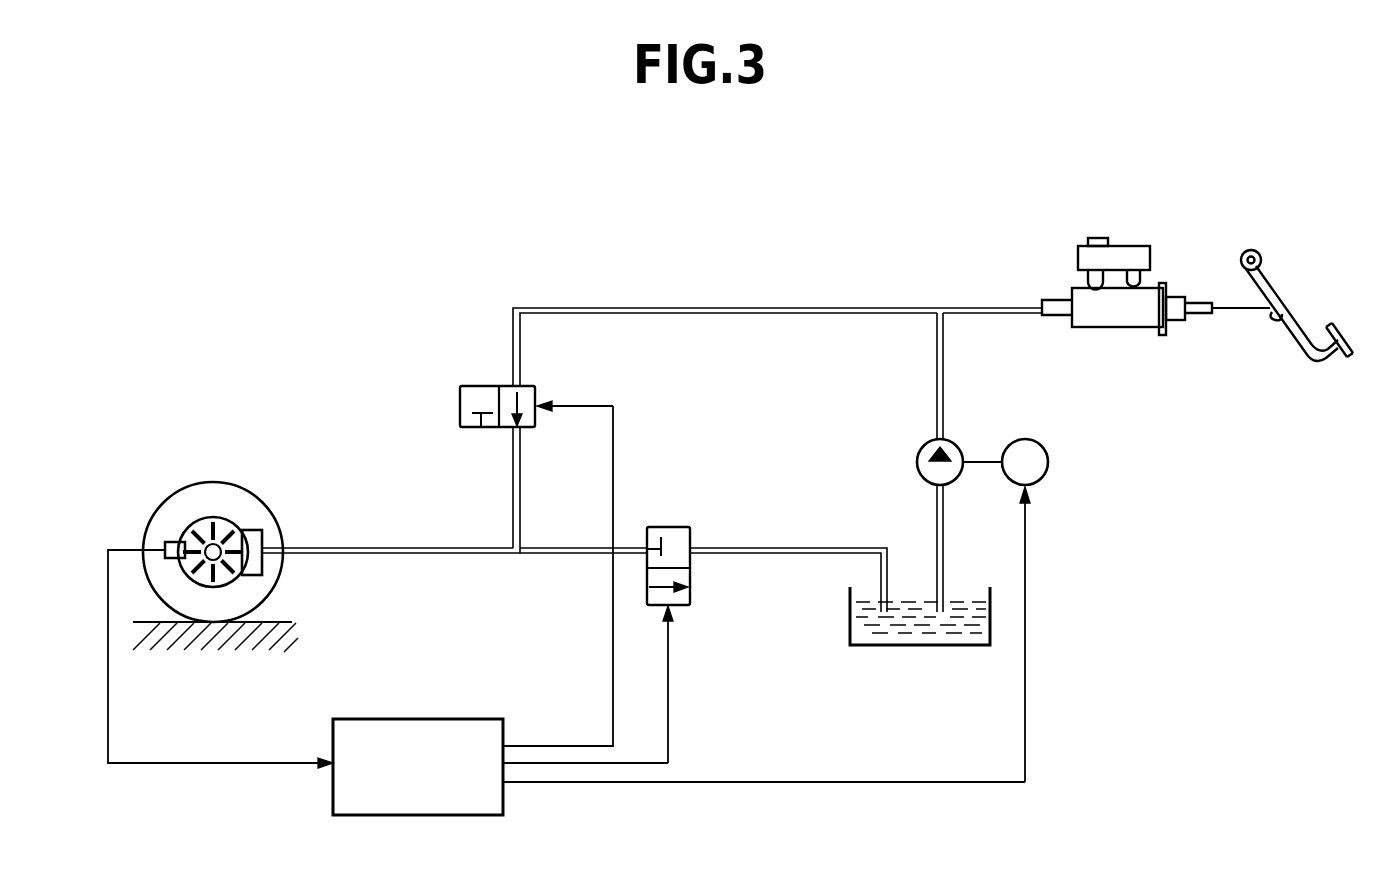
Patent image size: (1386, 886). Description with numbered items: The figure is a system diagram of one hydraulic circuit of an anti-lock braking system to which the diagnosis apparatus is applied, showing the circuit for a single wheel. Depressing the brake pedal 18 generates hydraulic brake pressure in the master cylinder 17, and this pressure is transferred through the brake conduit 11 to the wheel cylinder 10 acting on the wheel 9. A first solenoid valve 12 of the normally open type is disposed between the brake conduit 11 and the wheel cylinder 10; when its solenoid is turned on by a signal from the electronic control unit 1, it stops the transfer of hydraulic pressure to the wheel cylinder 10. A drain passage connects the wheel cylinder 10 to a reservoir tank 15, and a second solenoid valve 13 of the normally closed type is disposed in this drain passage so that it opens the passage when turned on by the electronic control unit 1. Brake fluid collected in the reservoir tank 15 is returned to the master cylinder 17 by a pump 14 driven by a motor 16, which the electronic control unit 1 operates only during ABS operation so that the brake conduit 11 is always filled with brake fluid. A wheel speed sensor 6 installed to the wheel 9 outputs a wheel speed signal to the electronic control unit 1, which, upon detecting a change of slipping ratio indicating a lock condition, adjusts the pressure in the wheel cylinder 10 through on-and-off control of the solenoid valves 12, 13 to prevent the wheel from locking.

The electronic control unit 1 is at (405, 735).
The wheel speed sensor 6 is at (163, 540).
The wheel 9 is at (204, 491).
The wheel cylinder 10 is at (253, 538).
The brake conduit 11 is at (700, 307).
The first solenoid valve 12 is at (472, 386).
The second solenoid valve 13 is at (677, 535).
The pump 14 is at (918, 457).
The reservoir tank 15 is at (937, 650).
The motor 16 is at (1048, 452).
The master cylinder 17 is at (1130, 252).
The brake pedal 18 is at (1273, 285).